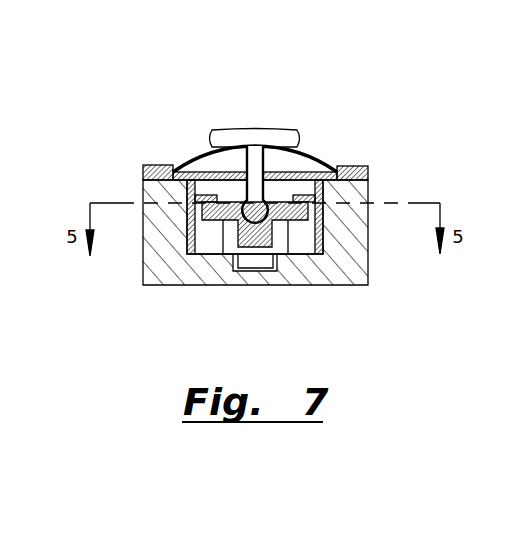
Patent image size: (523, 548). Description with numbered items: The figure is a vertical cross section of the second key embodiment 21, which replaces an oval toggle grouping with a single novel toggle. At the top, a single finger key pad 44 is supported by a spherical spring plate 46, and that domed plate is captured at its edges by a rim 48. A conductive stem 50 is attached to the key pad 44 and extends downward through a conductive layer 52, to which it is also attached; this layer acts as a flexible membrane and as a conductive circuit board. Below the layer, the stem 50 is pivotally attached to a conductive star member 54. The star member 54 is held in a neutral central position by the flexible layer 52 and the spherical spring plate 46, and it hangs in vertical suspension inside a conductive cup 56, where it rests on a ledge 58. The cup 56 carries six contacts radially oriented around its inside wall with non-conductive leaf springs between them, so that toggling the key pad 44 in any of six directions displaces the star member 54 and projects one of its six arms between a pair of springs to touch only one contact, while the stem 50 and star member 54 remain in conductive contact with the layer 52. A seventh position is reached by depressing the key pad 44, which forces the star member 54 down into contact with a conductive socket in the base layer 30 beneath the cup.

The second key embodiment 21 is at (272, 184).
The base layer 30 is at (369, 247).
The finger key pad 44 is at (230, 129).
The spherical spring plate 46 is at (325, 160).
The rim 48 is at (145, 167).
The conductive stem 50 is at (253, 163).
The conductive layer 52 is at (295, 172).
The conductive star member 54 is at (295, 222).
The conductive cup 56 is at (187, 243).
The ledge 58 is at (295, 196).